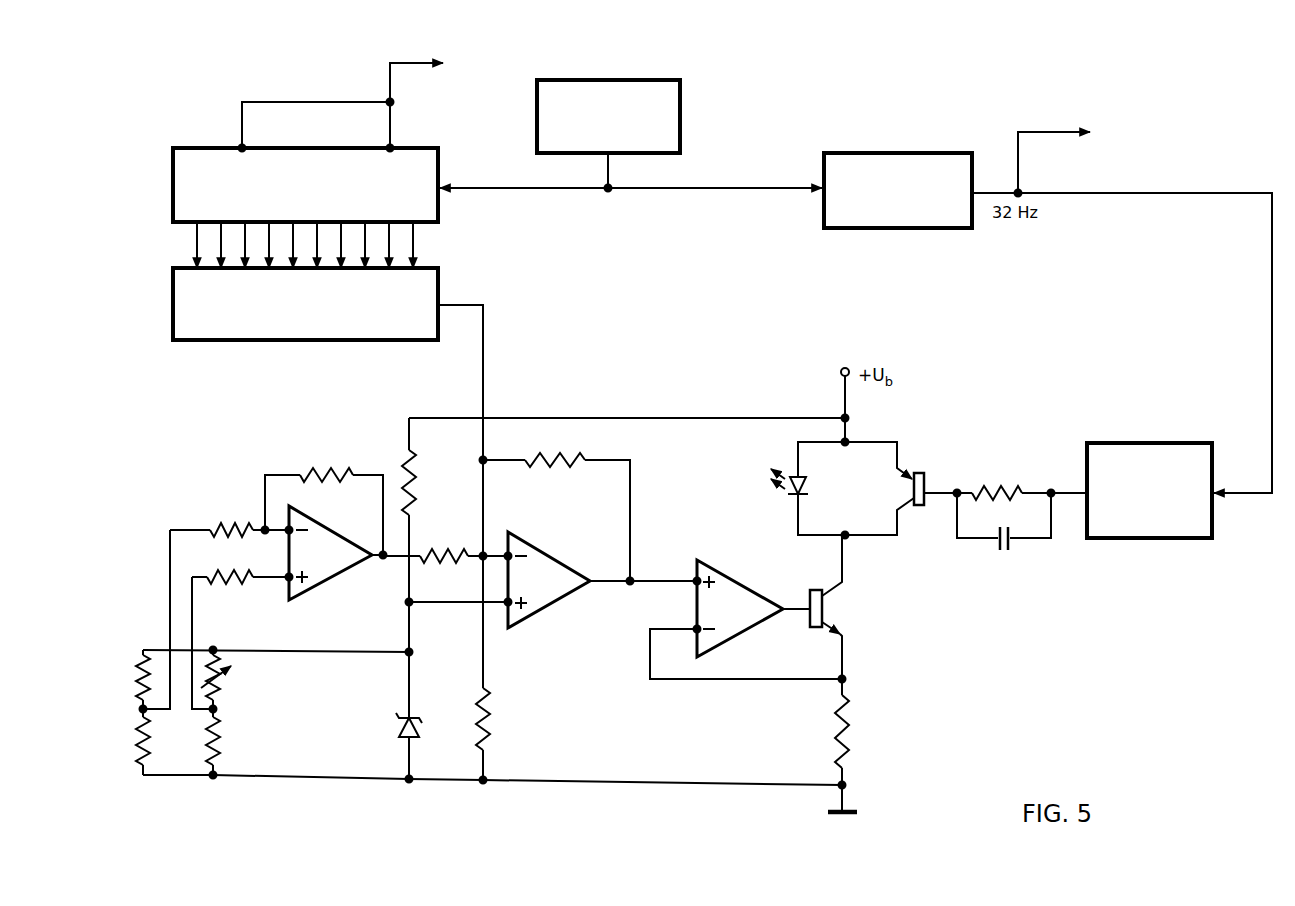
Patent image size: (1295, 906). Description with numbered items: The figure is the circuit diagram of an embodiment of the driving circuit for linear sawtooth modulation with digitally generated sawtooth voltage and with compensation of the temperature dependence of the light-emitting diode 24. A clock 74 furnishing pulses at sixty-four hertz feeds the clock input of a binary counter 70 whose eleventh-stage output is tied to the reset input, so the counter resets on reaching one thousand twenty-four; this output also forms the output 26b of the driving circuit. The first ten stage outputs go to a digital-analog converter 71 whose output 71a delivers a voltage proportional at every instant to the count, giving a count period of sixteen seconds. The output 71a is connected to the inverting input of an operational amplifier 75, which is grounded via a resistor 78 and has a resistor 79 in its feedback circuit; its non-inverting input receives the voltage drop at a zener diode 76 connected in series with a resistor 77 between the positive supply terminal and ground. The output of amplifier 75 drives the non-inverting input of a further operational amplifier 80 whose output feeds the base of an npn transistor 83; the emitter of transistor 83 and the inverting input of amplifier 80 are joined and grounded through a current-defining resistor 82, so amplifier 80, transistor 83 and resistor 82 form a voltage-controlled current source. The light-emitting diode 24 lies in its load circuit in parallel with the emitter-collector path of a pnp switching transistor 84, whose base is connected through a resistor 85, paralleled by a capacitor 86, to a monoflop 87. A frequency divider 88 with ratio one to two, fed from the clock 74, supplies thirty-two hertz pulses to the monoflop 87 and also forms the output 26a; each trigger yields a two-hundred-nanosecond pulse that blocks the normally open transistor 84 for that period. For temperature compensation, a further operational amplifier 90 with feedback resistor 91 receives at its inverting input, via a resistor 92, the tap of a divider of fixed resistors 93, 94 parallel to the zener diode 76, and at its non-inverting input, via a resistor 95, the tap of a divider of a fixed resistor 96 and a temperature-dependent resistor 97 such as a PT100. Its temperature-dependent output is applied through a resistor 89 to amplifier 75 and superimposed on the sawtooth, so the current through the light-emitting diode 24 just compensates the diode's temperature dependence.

The binary counter 70 is at (188, 160).
The digital-analog converter 71 is at (218, 332).
The output of the digital-analog converter 71a is at (442, 300).
The clock 74 is at (675, 122).
The frequency divider 88 is at (848, 215).
The monoflop 87 is at (1150, 455).
The output of the driving circuit 26a is at (1075, 158).
The output of the driving circuit 26b is at (441, 80).
The light-emitting diode 24 is at (808, 484).
The pnp switching transistor 84 is at (917, 473).
The resistor 85 is at (992, 475).
The capacitor 86 is at (1010, 547).
The npn transistor 83 is at (827, 608).
The resistor 82 is at (850, 743).
The operational amplifier 80 is at (742, 595).
The operational amplifier 75 is at (552, 590).
The resistor 79 is at (587, 455).
The resistor 77 is at (420, 472).
The resistor 89 is at (447, 542).
The resistor 78 is at (488, 712).
The zener diode 76 is at (393, 726).
The operational amplifier 90 is at (335, 570).
The resistor 91 is at (337, 469).
The resistor 92 is at (226, 519).
The resistor 95 is at (242, 579).
The fixed resistor 94 is at (140, 667).
The fixed resistor 93 is at (138, 742).
The temperature-dependent resistor 97 is at (222, 688).
The fixed resistor 96 is at (223, 752).